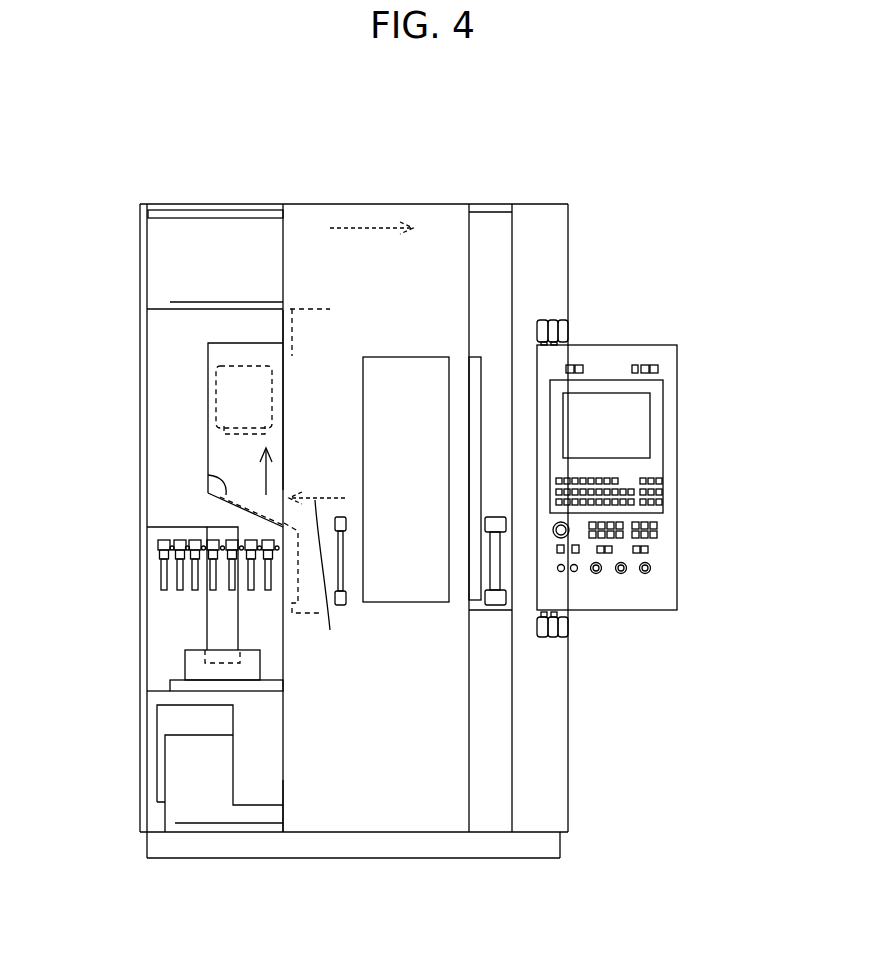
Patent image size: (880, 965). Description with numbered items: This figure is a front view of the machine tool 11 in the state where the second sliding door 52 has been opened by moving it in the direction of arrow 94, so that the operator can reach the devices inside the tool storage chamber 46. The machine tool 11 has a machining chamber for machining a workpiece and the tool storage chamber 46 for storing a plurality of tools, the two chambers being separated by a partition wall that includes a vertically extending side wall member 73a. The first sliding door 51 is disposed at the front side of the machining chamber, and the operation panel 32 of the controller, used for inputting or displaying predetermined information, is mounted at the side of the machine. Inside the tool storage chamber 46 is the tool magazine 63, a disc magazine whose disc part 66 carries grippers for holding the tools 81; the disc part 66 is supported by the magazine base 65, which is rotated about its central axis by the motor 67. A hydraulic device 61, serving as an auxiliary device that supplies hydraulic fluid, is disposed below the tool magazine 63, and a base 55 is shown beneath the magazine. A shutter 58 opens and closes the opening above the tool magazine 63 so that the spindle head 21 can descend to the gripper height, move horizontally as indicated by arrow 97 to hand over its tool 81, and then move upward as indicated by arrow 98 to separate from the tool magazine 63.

The machine tool 11 is at (503, 130).
The arrow 94 is at (358, 228).
The side wall member 73a is at (232, 355).
The spindle head 21 is at (214, 393).
The tool storage chamber 46 is at (176, 418).
The arrow 98 is at (266, 473).
The shutter 58 is at (208, 475).
The tool magazine 63 is at (92, 500).
The motor 67 is at (160, 527).
The disc part 66 is at (158, 548).
The magazine base 65 is at (218, 600).
The tool 81 is at (270, 590).
The base 55 is at (178, 686).
The hydraulic device 61 is at (182, 812).
The second sliding door 52 is at (315, 795).
The arrow 97 is at (330, 630).
The first sliding door 51 is at (483, 795).
The operation panel 32 is at (658, 407).